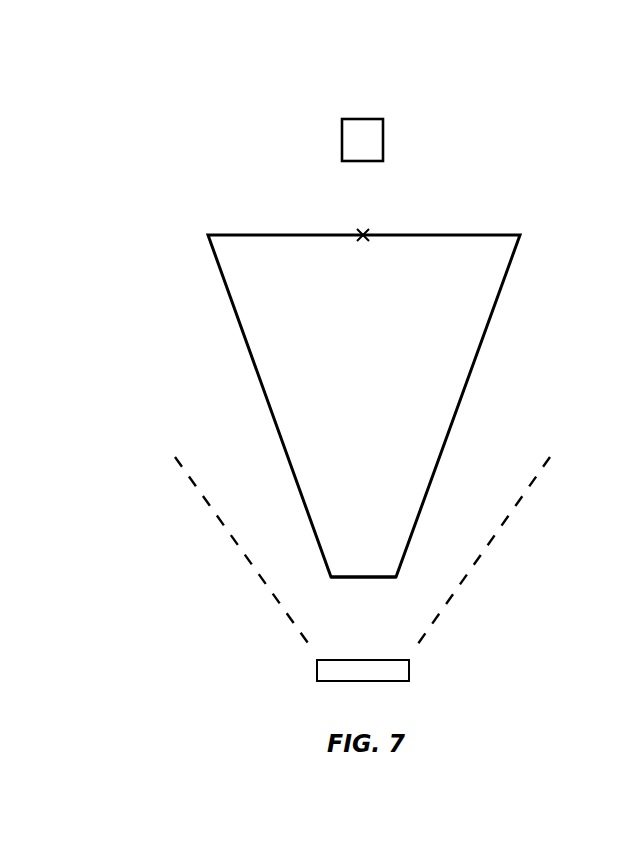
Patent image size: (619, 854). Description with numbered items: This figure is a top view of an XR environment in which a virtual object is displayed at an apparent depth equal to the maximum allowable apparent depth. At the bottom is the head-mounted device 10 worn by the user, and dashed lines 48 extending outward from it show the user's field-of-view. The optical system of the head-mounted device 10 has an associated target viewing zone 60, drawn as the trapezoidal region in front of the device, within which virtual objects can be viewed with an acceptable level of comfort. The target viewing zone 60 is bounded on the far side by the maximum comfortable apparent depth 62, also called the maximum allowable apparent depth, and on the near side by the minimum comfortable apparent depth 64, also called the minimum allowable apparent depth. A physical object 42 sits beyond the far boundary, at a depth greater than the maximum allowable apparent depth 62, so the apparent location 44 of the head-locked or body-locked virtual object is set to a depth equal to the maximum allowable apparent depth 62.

The head-mounted device 10 is at (409, 669).
The physical object 42 is at (384, 132).
The apparent location 44 is at (362, 240).
The dashed lines 48 is at (201, 491).
The target viewing zone 60 is at (494, 414).
The maximum comfortable apparent depth 62 is at (373, 376).
The minimum comfortable apparent depth 64 is at (370, 577).